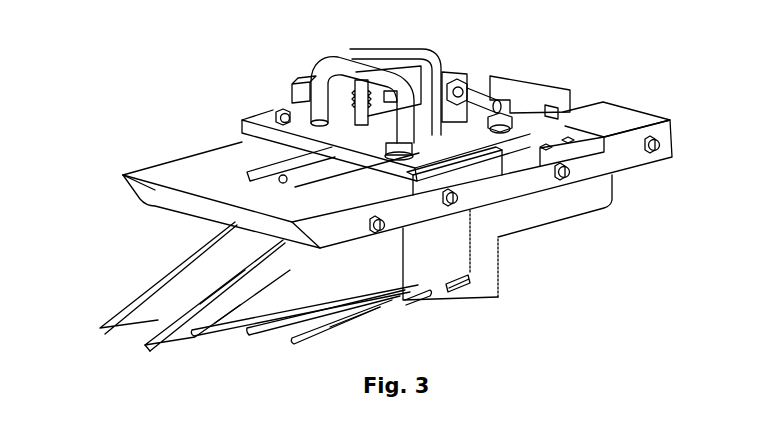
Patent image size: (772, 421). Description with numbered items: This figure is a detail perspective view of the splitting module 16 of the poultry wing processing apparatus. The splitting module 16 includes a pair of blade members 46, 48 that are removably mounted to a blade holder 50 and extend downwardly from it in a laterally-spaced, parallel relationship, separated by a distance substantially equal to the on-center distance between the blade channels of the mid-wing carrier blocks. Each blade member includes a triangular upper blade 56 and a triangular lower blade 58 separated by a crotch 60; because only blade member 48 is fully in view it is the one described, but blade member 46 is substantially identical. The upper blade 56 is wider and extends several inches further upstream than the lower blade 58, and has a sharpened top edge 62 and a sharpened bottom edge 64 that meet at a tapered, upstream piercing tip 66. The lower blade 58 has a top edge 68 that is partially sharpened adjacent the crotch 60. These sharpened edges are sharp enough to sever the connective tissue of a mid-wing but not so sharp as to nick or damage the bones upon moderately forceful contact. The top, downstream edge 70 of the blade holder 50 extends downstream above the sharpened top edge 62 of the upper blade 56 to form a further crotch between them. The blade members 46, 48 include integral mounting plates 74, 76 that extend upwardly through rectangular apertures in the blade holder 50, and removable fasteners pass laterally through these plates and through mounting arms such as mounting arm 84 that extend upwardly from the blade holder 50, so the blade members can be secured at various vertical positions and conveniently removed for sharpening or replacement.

The splitting module 16 is at (180, 159).
The blade holder 50 is at (232, 160).
The top, downstream edge of the blade holder 70 is at (148, 182).
The mounting plate 74 is at (424, 62).
The mounting plate 76 is at (465, 68).
The mounting arm 84 is at (462, 76).
The blade member 46 is at (113, 318).
The blade member 48 is at (187, 308).
The sharpened top edge 62 is at (222, 282).
The piercing tip 66 is at (143, 342).
The upper blade 56 is at (223, 305).
The sharpened bottom edge 64 is at (230, 328).
The lower blade 58 is at (307, 342).
The top edge 68 is at (378, 307).
The crotch 60 is at (425, 290).